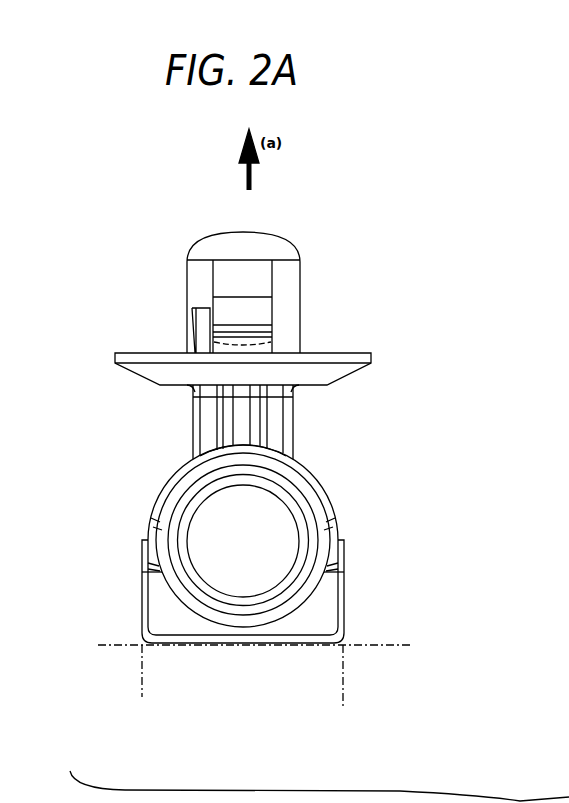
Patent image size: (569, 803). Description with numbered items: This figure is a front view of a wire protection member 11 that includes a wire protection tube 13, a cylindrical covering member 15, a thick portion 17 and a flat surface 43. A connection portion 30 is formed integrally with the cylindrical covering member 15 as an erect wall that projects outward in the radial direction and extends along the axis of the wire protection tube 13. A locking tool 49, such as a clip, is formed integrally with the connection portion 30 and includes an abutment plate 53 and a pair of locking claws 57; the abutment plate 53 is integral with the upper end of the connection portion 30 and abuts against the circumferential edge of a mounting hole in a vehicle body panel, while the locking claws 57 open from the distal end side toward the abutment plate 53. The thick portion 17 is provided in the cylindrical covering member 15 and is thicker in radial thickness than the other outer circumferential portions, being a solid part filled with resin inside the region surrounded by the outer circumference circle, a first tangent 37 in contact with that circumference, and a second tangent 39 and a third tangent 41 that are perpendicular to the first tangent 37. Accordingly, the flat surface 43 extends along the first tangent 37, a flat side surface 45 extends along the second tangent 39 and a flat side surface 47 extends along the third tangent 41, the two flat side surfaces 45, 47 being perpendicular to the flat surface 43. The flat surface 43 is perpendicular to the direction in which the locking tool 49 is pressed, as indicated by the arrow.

The wire protection member 11 is at (150, 267).
The wire protection tube 13 is at (164, 594).
The cylindrical covering member 15 is at (142, 495).
The thick portion 17 is at (177, 623).
The connection portion 30 is at (207, 417).
The first tangent 37 is at (393, 647).
The second tangent 39 is at (140, 675).
The third tangent 41 is at (343, 690).
The flat surface 43 is at (267, 647).
The flat side surface 45 is at (142, 580).
The flat side surface 47 is at (345, 600).
The locking tool 49 is at (289, 228).
The abutment plate 53 is at (150, 370).
The locking claws 57 is at (257, 312).